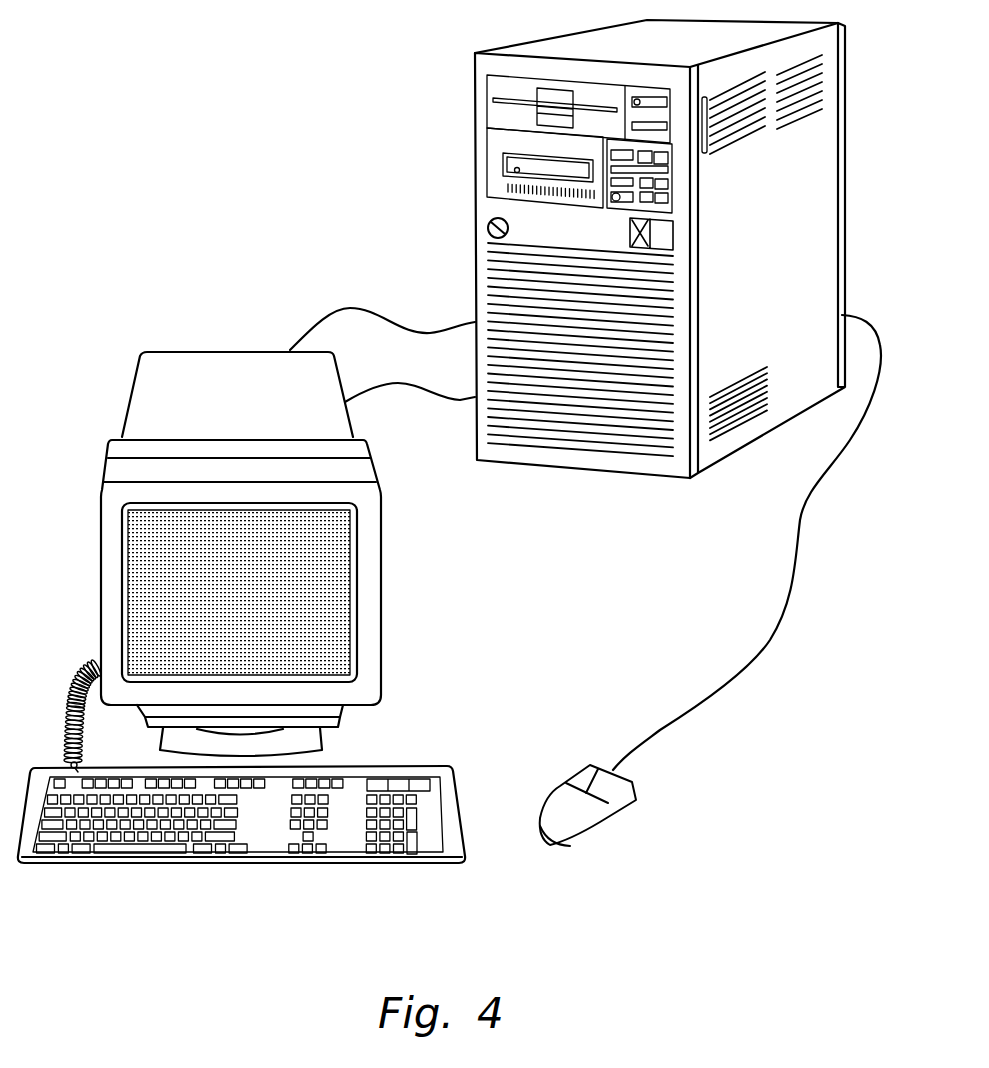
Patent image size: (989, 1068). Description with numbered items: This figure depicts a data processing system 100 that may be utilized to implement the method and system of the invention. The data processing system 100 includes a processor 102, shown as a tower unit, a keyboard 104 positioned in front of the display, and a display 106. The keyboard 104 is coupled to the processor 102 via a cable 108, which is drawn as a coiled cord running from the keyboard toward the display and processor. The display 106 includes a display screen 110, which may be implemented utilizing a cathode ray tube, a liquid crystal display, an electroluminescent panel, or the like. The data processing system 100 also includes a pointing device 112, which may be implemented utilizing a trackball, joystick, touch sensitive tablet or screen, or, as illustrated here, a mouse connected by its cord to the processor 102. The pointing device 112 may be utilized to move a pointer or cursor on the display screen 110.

The data processing system 100 is at (232, 178).
The processor 102 is at (473, 270).
The keyboard 104 is at (270, 863).
The display 106 is at (250, 372).
The cable 108 is at (67, 693).
The display screen 110 is at (322, 563).
The pointing device 112 is at (600, 827).